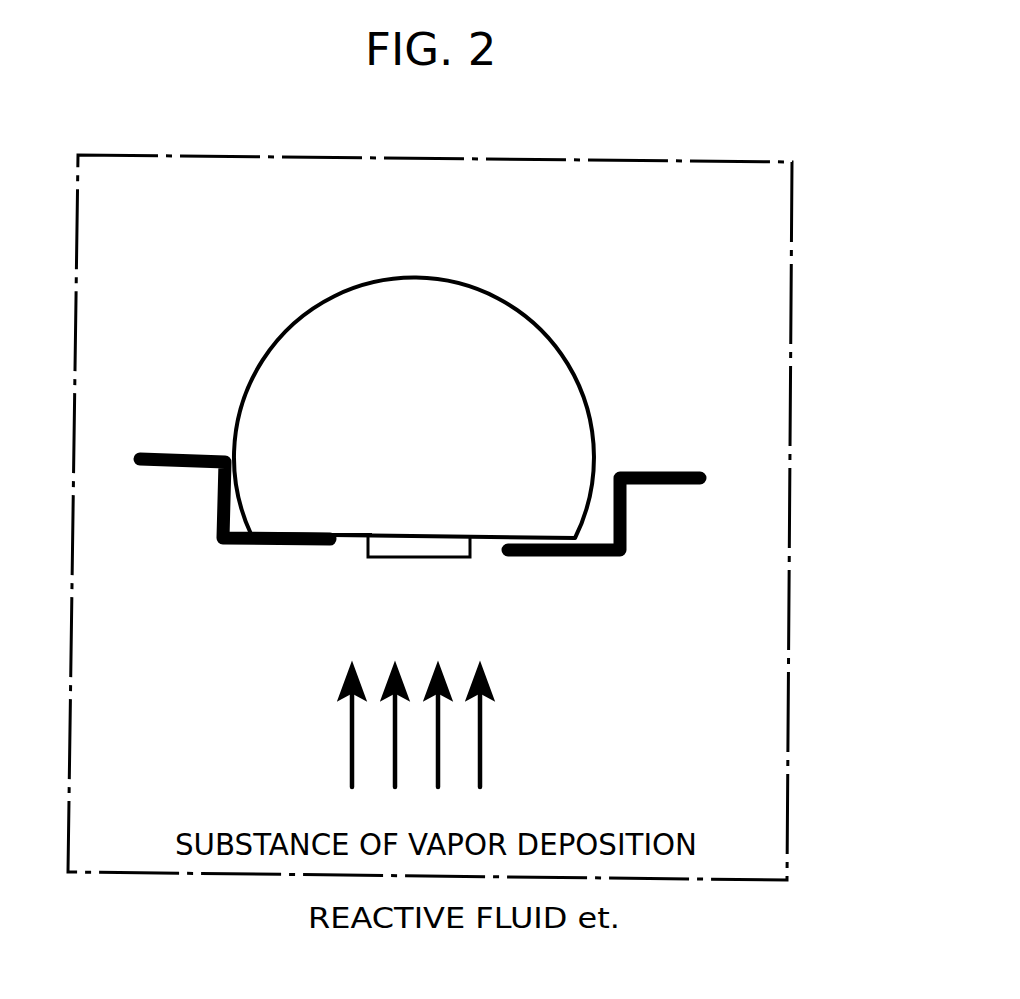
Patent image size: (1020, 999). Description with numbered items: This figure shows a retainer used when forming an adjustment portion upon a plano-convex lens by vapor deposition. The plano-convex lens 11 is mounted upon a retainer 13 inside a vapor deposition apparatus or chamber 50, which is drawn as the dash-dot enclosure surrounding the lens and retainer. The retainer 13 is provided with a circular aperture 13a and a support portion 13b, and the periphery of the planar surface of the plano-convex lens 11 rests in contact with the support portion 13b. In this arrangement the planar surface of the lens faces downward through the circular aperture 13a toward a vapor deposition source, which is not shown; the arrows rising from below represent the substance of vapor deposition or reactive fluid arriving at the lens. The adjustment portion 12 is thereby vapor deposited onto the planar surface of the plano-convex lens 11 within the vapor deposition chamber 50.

The vapor deposition chamber 50 is at (722, 162).
The plano-convex lens 11 is at (565, 347).
The adjustment portion 12 is at (442, 560).
The retainer 13 is at (550, 557).
The circular aperture 13a is at (347, 547).
The support portion 13b is at (265, 552).